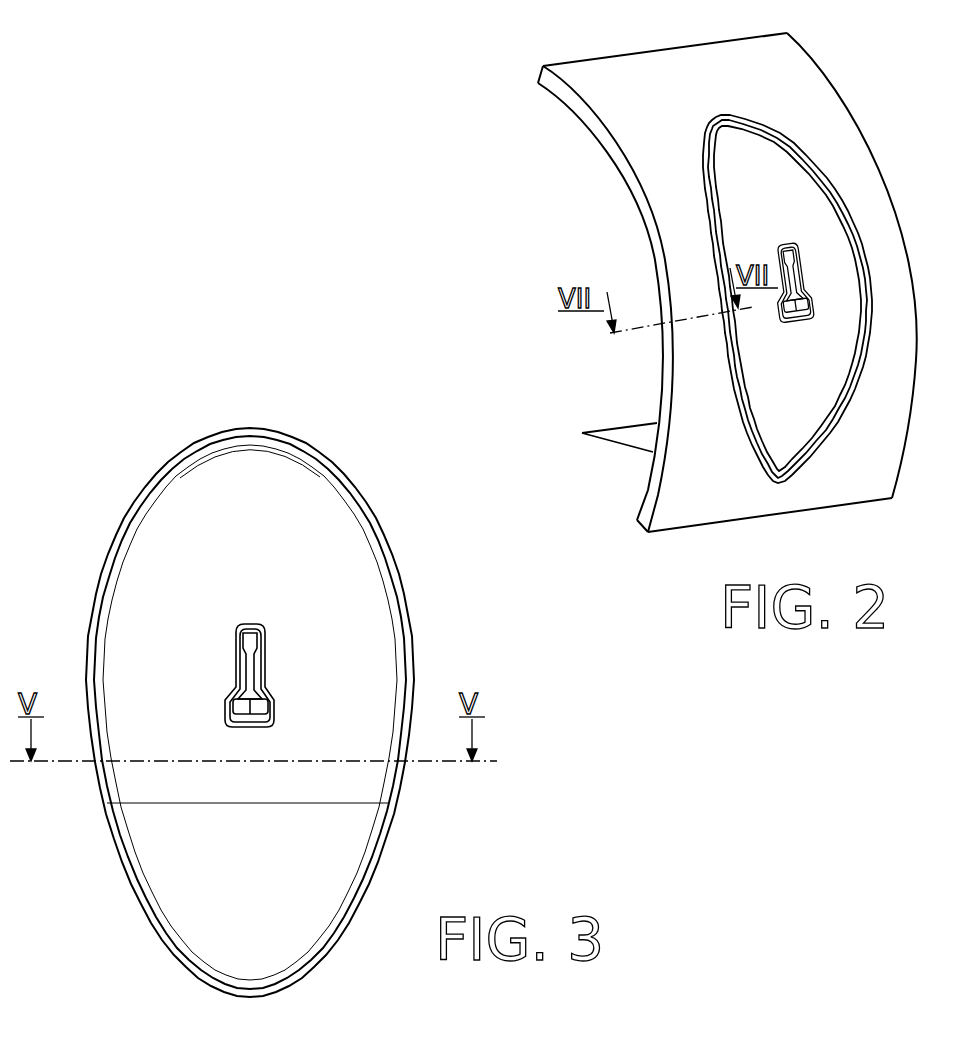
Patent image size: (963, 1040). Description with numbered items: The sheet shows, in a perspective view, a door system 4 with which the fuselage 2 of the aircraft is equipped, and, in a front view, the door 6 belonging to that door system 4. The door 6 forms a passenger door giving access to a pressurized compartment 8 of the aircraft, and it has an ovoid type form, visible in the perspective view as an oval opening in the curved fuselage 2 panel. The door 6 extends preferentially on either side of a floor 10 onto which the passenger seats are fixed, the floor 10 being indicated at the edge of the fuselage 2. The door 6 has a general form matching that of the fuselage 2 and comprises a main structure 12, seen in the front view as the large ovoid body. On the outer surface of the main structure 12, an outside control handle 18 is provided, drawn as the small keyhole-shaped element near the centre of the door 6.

In FIG. 2, the fuselage 2 is at (802, 73).
In FIG. 2, the door system 4 is at (825, 172).
In FIG. 2, the door 6 is at (793, 147).
In FIG. 3, the door 6 is at (146, 433).
In FIG. 2, the pressurized compartment 8 is at (560, 237).
In FIG. 2, the floor 10 is at (583, 434).
In FIG. 3, the main structure 12 is at (343, 533).
In FIG. 3, the outside control handle 18 is at (250, 642).